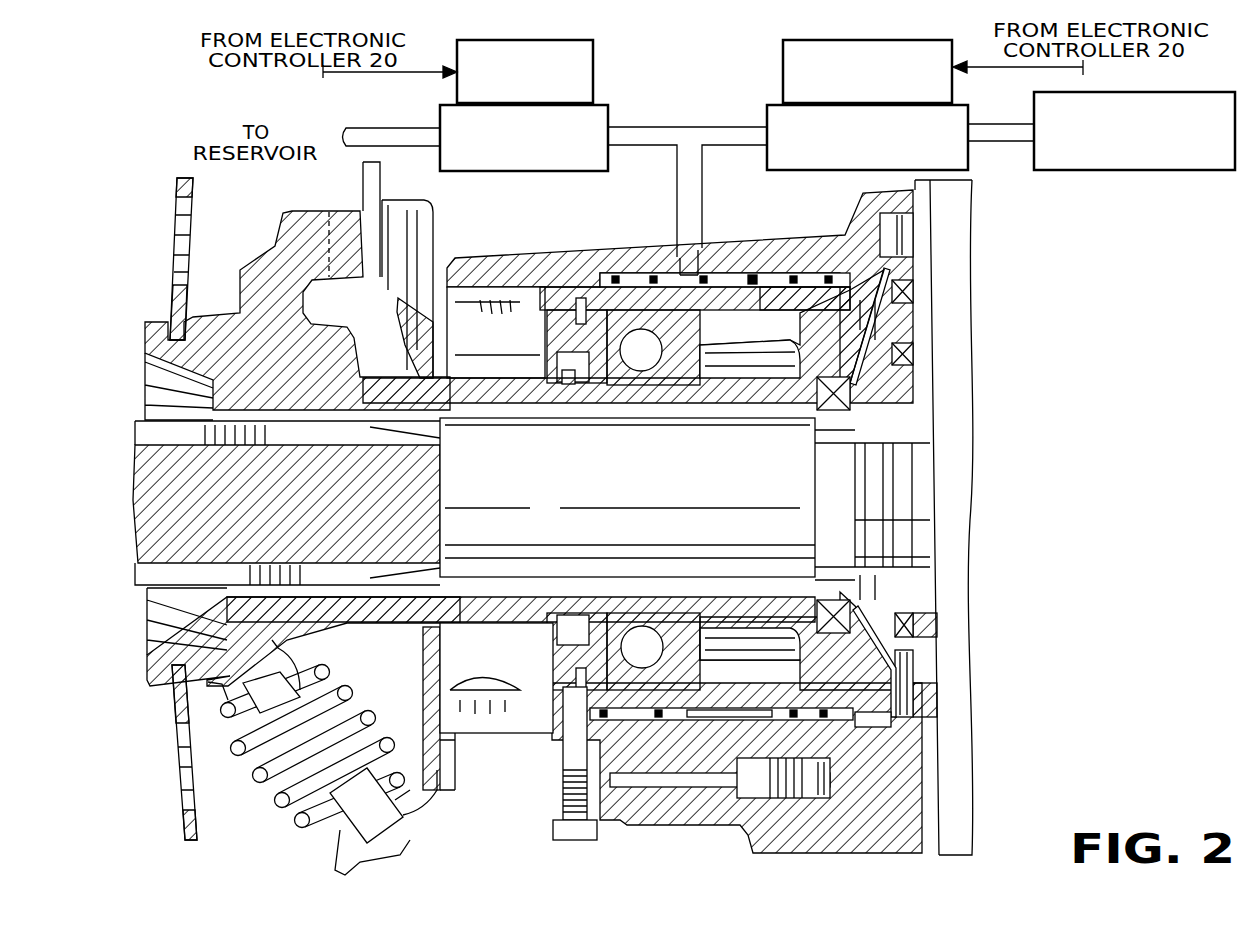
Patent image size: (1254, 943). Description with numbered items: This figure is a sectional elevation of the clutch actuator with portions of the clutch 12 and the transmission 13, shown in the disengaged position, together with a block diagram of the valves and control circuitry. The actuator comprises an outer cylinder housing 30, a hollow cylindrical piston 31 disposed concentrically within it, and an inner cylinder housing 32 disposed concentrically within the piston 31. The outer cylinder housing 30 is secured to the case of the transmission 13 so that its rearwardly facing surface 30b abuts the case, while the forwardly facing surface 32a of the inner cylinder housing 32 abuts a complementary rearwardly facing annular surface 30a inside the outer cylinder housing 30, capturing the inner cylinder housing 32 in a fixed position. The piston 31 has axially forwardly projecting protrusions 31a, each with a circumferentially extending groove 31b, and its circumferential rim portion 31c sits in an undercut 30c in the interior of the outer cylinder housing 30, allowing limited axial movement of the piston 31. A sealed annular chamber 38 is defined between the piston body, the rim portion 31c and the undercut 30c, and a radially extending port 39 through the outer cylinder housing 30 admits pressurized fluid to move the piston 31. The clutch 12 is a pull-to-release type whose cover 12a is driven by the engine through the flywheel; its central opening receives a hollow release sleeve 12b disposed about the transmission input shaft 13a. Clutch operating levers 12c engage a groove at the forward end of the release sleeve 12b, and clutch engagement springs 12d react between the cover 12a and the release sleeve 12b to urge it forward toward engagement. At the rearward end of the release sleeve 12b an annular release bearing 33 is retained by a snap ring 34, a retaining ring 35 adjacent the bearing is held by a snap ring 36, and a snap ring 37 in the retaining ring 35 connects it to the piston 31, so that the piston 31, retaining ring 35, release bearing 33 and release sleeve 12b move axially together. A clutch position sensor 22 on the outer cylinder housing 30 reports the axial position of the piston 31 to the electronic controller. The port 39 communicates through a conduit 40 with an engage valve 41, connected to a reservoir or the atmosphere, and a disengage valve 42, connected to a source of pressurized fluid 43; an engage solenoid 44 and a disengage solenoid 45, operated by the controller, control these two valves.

The clutch 12 is at (225, 228).
The cover 12a is at (430, 787).
The release sleeve 12b is at (218, 322).
The clutch operating levers 12c is at (177, 185).
The clutch engagement springs 12d is at (274, 800).
The transmission 13 is at (957, 302).
The transmission input shaft 13a is at (143, 520).
The clutch position sensor 22 is at (606, 838).
The outer cylinder housing 30 is at (485, 258).
The rearwardly facing annular surface 30a is at (920, 727).
The rearwardly facing surface 30b is at (922, 780).
The undercut 30c is at (735, 274).
The piston 31 is at (700, 660).
The protrusions 31a is at (560, 300).
The groove 31b is at (595, 688).
The rim portion 31c is at (832, 273).
The inner cylinder housing 32 is at (800, 363).
The forwardly facing surface 32a is at (853, 685).
The release bearing 33 is at (648, 375).
The snap ring 34 is at (683, 375).
The retaining ring 35 is at (545, 333).
The snap ring 36 is at (568, 385).
The snap ring 37 is at (556, 318).
The annular chamber 38 is at (753, 275).
The port 39 is at (695, 257).
The conduit 40 is at (692, 137).
The engage valve 41 is at (601, 115).
The disengage valve 42 is at (968, 158).
The source of pressurized fluid 43 is at (1203, 162).
The engage solenoid 44 is at (597, 52).
The disengage solenoid 45 is at (784, 57).